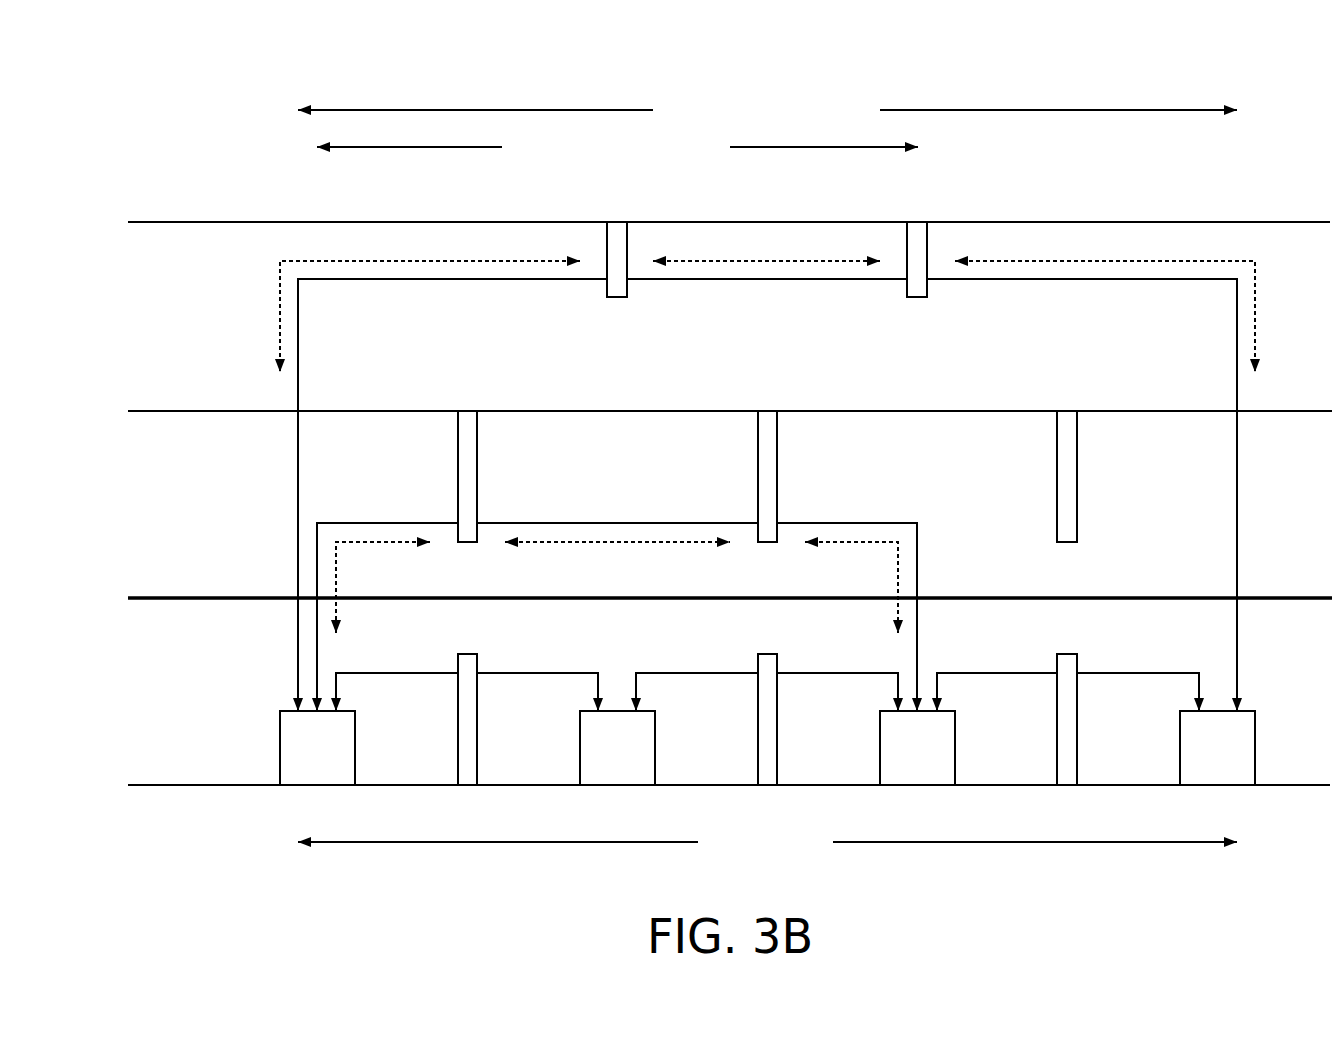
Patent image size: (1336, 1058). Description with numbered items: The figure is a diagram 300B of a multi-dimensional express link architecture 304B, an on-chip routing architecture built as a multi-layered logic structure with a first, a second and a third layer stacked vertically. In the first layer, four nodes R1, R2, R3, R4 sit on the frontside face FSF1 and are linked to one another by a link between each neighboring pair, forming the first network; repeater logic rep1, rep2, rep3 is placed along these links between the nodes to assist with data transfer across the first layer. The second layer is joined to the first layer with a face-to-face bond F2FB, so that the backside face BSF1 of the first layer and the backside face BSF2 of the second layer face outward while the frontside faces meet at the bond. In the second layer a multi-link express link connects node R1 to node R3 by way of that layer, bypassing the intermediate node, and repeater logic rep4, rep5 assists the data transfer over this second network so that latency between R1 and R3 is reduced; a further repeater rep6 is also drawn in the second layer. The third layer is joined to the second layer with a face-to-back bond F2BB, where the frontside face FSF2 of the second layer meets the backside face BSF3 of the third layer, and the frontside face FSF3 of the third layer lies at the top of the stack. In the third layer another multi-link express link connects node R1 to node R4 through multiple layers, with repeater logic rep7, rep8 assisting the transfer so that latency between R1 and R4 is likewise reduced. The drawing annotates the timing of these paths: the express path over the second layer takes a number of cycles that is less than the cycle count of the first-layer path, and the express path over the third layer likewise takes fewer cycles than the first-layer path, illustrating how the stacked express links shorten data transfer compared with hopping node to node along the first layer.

The diagram 300B is at (230, 62).
The 3D express link architecture 304B is at (890, 74).
The node R1 is at (317, 748).
The node R2 is at (617, 748).
The node R3 is at (917, 748).
The node R4 is at (1217, 748).
The repeater logic rep1 is at (467, 735).
The repeater logic rep2 is at (767, 735).
The repeater logic rep3 is at (1067, 735).
The repeater logic rep4 is at (467, 461).
The repeater logic rep5 is at (767, 461).
The repeater rep6 is at (1067, 461).
The repeater logic rep7 is at (617, 245).
The repeater logic rep8 is at (917, 245).
The element link is at (767, 676).
The frontside face FSF1 is at (729, 770).
The frontside face FSF2 is at (741, 426).
The frontside face FSF3 is at (729, 237).
The backside face BSF1 is at (741, 613).
The backside face BSF2 is at (414, 583).
The backside face BSF3 is at (414, 396).
The face-to-back bond F2BB is at (701, 411).
The face-to-face bond F2FB is at (701, 598).